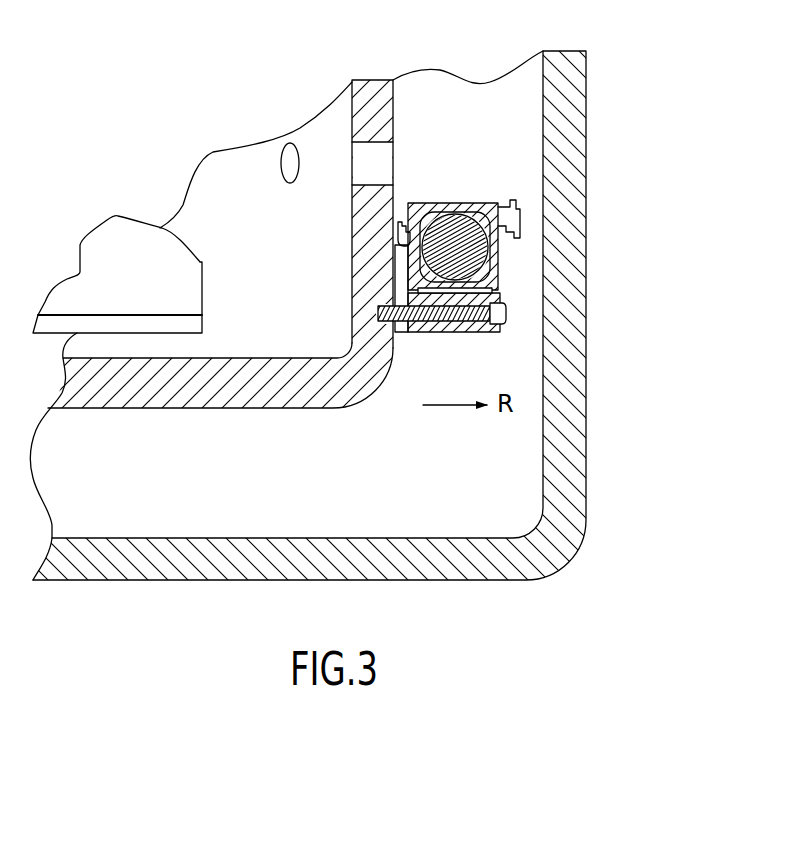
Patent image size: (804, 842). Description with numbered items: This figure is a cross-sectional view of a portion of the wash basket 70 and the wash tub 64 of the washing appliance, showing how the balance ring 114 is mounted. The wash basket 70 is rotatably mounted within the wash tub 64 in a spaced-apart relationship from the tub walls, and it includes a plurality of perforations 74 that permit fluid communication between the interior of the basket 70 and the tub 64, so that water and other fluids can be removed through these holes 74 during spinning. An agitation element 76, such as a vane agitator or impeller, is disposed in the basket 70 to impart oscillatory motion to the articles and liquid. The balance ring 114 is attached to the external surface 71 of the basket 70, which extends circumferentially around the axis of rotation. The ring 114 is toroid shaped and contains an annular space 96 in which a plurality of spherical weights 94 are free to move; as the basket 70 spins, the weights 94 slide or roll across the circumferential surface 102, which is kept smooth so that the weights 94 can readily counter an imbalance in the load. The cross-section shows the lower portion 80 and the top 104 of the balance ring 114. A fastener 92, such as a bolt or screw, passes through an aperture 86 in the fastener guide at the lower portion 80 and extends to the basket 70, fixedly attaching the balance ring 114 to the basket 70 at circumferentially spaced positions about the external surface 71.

The wash tub 64 is at (572, 73).
The wash basket 70 is at (207, 395).
The external surface 71 is at (400, 100).
The perforations 74 is at (280, 158).
The agitation element 76 is at (187, 287).
The lower portion 80 is at (498, 277).
The aperture 86 is at (485, 313).
The fasteners 92 is at (397, 322).
The weights 94 is at (458, 233).
The annular space 96 is at (453, 237).
The surface 102 is at (488, 272).
The top 104 is at (452, 203).
The balance ring 114 is at (513, 170).